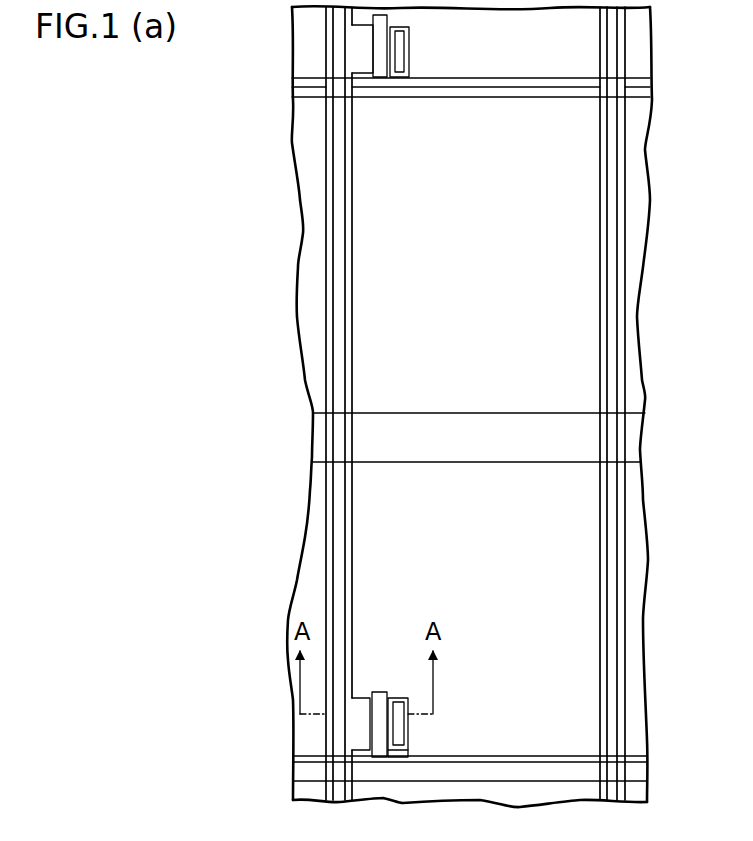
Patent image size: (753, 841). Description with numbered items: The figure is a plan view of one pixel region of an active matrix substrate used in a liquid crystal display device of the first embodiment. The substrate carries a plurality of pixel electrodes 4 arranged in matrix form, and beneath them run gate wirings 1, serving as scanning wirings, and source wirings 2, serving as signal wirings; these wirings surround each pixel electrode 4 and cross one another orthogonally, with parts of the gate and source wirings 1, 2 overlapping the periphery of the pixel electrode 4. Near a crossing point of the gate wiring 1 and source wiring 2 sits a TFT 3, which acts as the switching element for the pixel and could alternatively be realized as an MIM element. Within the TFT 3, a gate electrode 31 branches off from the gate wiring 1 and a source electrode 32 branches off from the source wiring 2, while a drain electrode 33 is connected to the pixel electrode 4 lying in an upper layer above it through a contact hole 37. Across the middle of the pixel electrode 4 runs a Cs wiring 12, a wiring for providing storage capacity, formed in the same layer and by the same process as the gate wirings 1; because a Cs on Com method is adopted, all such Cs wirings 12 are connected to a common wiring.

The gate wiring 1 is at (303, 88).
The source wiring 2 is at (338, 67).
The TFT 3 is at (438, 385).
The pixel electrode 4 is at (640, 540).
The Cs wiring 12 is at (638, 445).
The gate electrode 31 is at (380, 692).
The source electrode 32 is at (363, 690).
The drain electrode 33 is at (405, 752).
The contact hole 37 is at (398, 723).